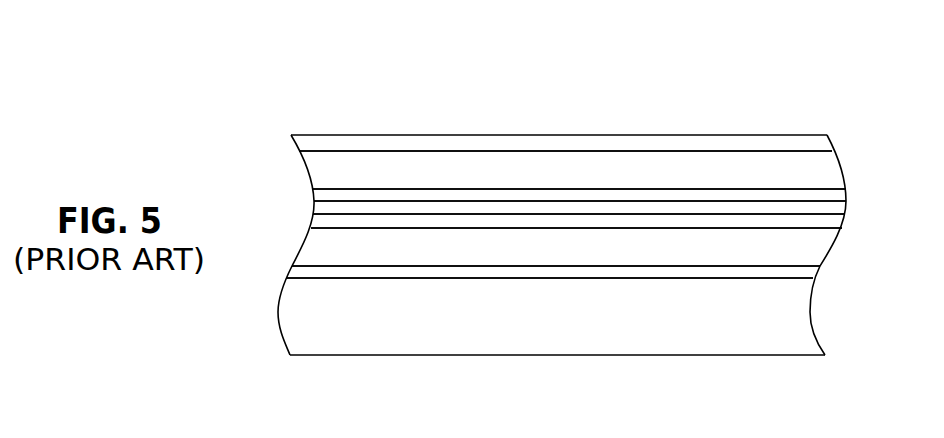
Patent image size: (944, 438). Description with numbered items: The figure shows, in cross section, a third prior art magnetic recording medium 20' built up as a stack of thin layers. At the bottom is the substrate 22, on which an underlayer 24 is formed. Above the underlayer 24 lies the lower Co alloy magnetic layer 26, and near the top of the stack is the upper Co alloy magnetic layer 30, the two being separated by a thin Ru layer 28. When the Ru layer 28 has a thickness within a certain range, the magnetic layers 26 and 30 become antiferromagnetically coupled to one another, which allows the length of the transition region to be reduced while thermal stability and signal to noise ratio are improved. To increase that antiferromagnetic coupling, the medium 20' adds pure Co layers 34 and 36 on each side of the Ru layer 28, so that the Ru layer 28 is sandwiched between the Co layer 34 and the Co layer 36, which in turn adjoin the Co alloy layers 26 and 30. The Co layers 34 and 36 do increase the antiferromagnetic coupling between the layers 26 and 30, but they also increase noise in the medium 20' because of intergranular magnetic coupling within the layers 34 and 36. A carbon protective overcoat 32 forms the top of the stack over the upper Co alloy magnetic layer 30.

The magnetic recording medium 20' is at (562, 187).
The substrate 22 is at (706, 329).
The underlayer 24 is at (462, 273).
The lower Co alloy magnetic layer 26 is at (719, 257).
The Ru layer 28 is at (535, 210).
The upper Co alloy magnetic layer 30 is at (742, 184).
The carbon protective overcoat 32 is at (724, 140).
The Co layer 34 is at (408, 222).
The Co layer 36 is at (660, 196).